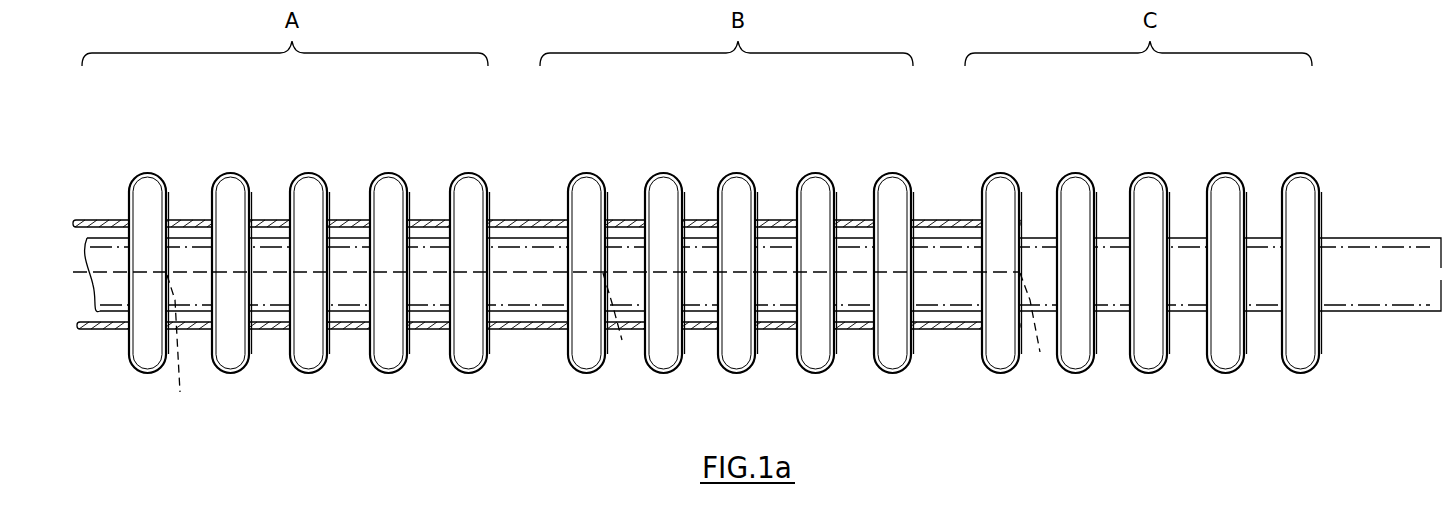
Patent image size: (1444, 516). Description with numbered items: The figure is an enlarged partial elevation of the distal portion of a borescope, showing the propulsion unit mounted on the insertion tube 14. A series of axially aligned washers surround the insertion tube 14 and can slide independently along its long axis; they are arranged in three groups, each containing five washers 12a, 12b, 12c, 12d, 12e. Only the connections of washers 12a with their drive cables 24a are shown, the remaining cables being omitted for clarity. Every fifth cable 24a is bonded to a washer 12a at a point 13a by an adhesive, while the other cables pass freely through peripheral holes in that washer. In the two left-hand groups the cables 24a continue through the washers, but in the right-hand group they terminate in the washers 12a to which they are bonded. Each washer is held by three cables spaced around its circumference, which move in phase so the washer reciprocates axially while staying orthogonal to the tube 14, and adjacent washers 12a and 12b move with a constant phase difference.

The washer 12a is at (148, 172).
The washer 12b is at (230, 172).
The washer 12c is at (308, 172).
The washer 12d is at (388, 172).
The washer 12e is at (468, 172).
The bonding point 13a is at (166, 221).
The insertion tube 14 is at (1390, 293).
The drive cable 24a is at (537, 221).